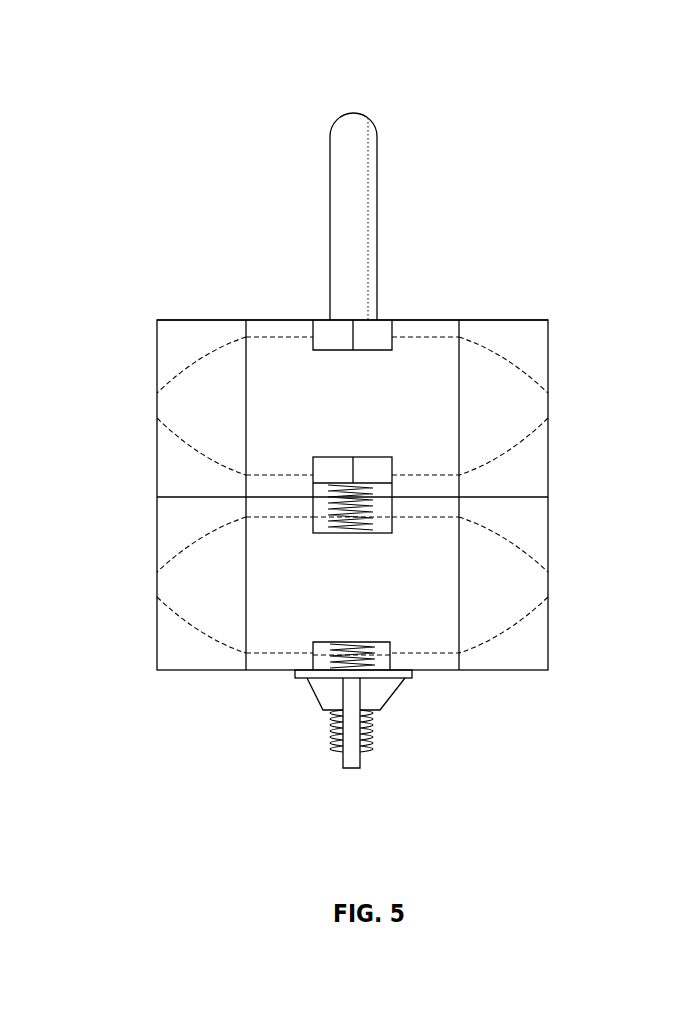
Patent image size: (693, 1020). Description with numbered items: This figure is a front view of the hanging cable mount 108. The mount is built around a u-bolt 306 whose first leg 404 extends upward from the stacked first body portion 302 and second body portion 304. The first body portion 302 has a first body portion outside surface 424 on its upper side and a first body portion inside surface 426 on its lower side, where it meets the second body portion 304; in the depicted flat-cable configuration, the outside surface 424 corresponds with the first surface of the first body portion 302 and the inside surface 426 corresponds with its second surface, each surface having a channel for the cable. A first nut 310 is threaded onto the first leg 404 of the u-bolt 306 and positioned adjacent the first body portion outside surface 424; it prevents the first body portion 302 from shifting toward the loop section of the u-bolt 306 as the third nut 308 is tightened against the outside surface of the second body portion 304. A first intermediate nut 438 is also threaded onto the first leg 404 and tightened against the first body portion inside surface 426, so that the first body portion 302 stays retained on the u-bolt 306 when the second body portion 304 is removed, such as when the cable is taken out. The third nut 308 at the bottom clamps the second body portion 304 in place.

The hanging cable mount 108 is at (575, 70).
The first body portion 302 is at (370, 418).
The second body portion 304 is at (370, 597).
The u-bolt 306 is at (350, 162).
The first leg 404 is at (348, 277).
The first nut 310 is at (372, 333).
The first intermediate nut 438 is at (370, 473).
The third nut 308 is at (368, 695).
The first body portion outside surface 424 is at (203, 315).
The first body portion inside surface 426 is at (192, 504).